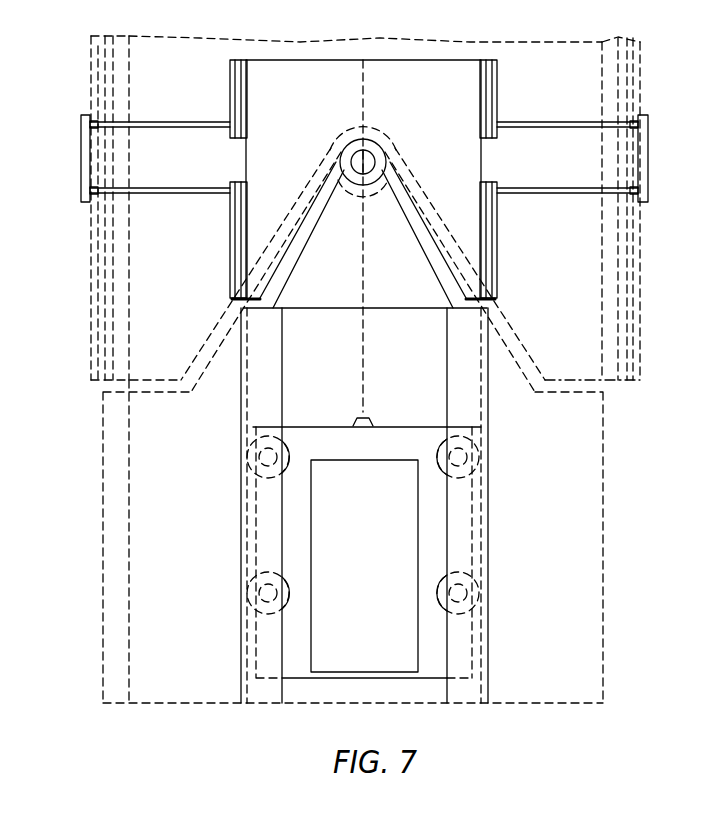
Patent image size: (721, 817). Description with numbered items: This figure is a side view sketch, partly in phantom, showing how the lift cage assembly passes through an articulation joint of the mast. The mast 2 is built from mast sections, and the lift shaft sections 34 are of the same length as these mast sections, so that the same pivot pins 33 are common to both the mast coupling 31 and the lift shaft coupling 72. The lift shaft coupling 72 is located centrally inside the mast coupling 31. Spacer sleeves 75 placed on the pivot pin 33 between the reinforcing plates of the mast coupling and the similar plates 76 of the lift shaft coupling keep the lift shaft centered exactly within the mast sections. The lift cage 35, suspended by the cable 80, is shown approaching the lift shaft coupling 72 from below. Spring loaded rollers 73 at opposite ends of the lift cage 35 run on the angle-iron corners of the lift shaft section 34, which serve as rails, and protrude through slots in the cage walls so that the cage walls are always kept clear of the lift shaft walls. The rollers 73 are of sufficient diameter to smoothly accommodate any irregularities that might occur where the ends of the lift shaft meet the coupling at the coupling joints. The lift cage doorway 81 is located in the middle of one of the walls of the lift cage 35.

The mast 2 is at (117, 575).
The mast coupling 31 is at (147, 68).
The pivot pin 33 is at (115, 143).
The lift shaft section 34 is at (488, 483).
The lift cage 35 is at (427, 426).
The lift shaft coupling 72 is at (462, 97).
The spring loaded rollers 73 is at (478, 565).
The spacer sleeves 75 is at (211, 122).
The reinforcing plates of the lift shaft coupling 76 is at (497, 243).
The cable 80 is at (358, 250).
The lift cage doorway 81 is at (420, 557).